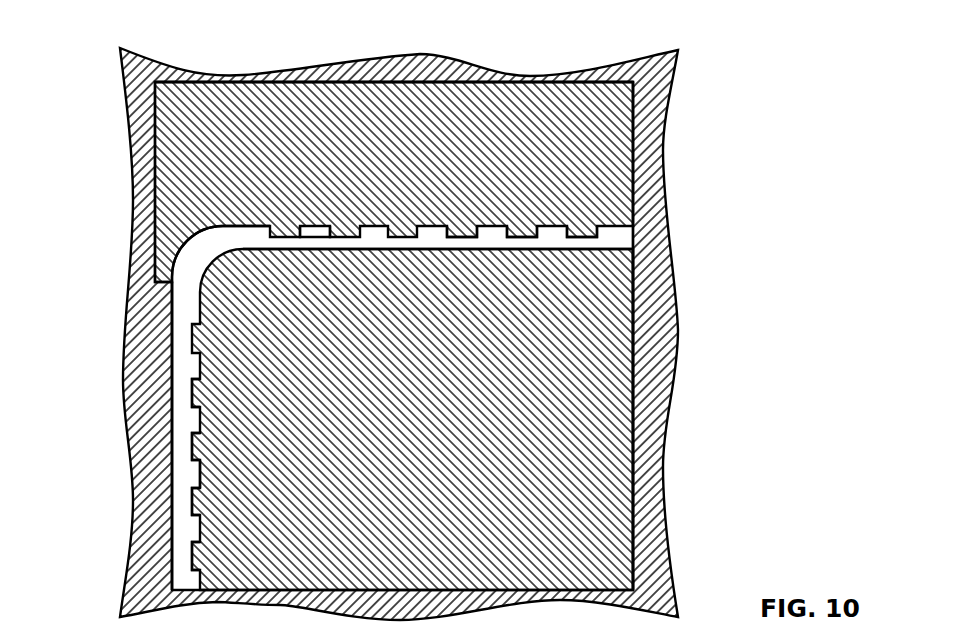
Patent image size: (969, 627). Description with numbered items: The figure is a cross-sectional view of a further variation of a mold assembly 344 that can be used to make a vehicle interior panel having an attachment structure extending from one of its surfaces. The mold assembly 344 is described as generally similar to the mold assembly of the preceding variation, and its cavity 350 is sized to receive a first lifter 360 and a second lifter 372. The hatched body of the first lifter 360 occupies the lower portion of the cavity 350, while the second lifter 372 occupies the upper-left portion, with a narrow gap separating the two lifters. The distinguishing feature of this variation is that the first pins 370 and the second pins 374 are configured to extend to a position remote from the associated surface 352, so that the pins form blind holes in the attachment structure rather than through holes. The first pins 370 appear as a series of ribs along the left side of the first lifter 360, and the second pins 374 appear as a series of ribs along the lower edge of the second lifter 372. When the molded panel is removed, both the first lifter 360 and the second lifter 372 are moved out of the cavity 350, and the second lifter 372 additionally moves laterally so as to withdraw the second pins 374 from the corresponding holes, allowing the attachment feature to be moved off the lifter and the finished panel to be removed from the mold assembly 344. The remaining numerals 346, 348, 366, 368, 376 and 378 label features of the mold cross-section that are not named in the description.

The mold assembly 344 is at (679, 46).
The housing wall 346 is at (647, 189).
The housing surface 348 is at (652, 277).
The cavity 350 is at (500, 82).
The surface 352 is at (176, 346).
The first lifter 360 is at (604, 366).
The groove 366 is at (197, 477).
The channel surface 368 is at (285, 249).
The first pins 370 is at (197, 558).
The second lifter 372 is at (597, 118).
The second pins 374 is at (580, 232).
The rib corner 376 is at (330, 235).
The curved wall 378 is at (185, 304).